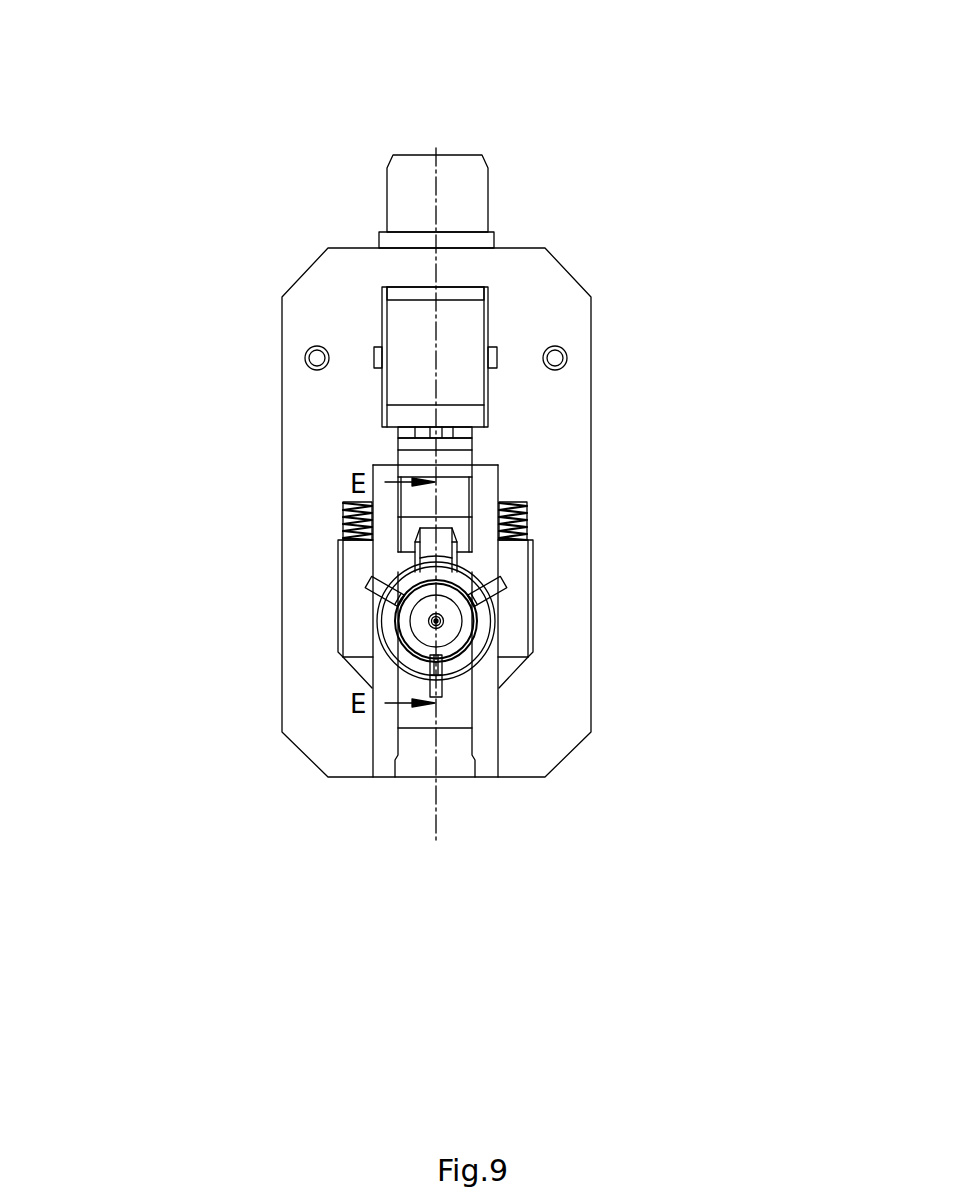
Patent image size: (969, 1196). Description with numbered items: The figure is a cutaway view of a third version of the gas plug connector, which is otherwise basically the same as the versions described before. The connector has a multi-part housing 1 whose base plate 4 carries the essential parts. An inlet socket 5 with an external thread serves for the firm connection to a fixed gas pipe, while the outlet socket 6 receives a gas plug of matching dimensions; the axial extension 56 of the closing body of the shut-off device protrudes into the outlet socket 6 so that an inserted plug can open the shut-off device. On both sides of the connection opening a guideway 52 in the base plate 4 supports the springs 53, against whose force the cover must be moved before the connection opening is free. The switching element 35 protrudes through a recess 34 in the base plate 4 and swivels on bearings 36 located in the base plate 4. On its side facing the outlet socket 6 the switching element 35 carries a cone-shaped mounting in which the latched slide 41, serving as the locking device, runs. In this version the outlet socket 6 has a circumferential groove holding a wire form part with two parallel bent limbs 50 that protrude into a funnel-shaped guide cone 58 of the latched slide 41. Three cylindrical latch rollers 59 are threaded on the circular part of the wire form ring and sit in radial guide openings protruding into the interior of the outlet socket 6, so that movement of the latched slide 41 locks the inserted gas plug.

The housing 1 is at (572, 424).
The base plate 4 is at (320, 561).
The inlet socket 5 is at (458, 126).
The outlet socket 6 is at (290, 649).
The recess 34 is at (624, 236).
The switching element 35 is at (281, 357).
The bearings 36 is at (671, 321).
The latched slide 41 is at (273, 495).
The bent limbs 50 is at (619, 581).
The guideway 52 is at (600, 614).
The springs 53 is at (602, 460).
The axial extension 56 is at (646, 668).
The guide cone 58 is at (265, 574).
The latch rollers 59 is at (646, 741).